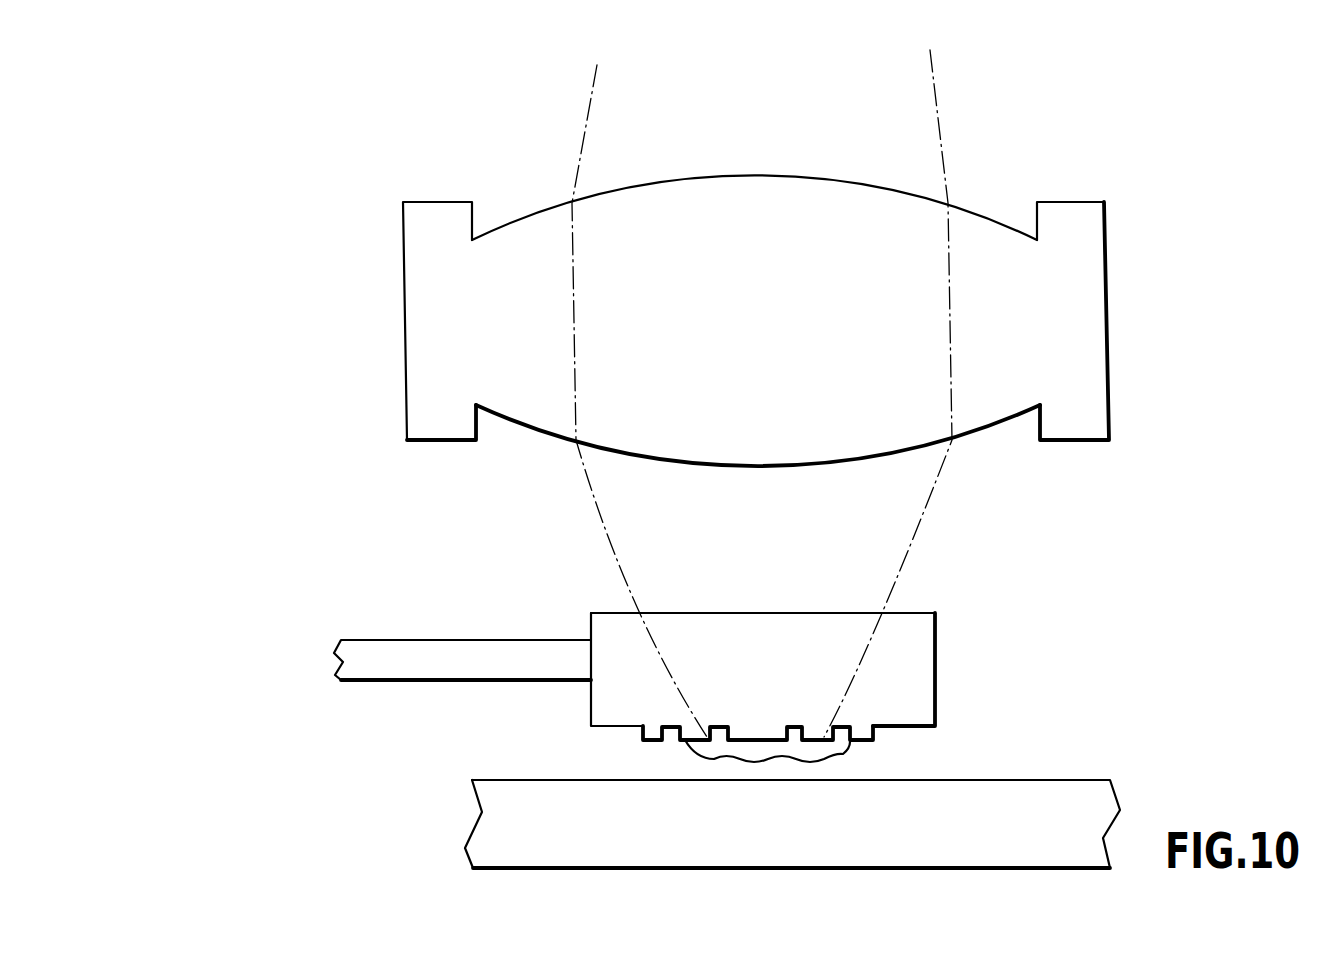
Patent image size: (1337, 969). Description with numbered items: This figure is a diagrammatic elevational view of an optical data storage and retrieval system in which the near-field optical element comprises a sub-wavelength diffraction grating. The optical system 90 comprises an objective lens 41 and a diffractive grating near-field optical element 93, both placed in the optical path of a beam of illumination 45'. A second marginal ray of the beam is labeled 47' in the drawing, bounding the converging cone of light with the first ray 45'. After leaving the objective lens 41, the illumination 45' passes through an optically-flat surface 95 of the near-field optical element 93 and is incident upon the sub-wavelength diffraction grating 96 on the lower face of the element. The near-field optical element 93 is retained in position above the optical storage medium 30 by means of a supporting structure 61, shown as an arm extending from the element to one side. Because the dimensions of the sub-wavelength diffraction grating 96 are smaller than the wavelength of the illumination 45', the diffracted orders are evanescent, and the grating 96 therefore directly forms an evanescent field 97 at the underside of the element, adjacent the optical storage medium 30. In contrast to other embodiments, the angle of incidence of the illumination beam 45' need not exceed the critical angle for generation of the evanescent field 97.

The optical system 90 is at (330, 320).
The objective lens 41 is at (1098, 441).
The illumination beam 45' is at (601, 401).
The light ray 47' is at (922, 393).
The supporting structure 61 is at (444, 640).
The optically-flat surface 95 is at (761, 613).
The diffractive grating near-field optical element 93 is at (937, 632).
The sub-wavelength diffraction grating 96 is at (942, 740).
The evanescent field 97 is at (847, 743).
The optical storage medium 30 is at (473, 826).